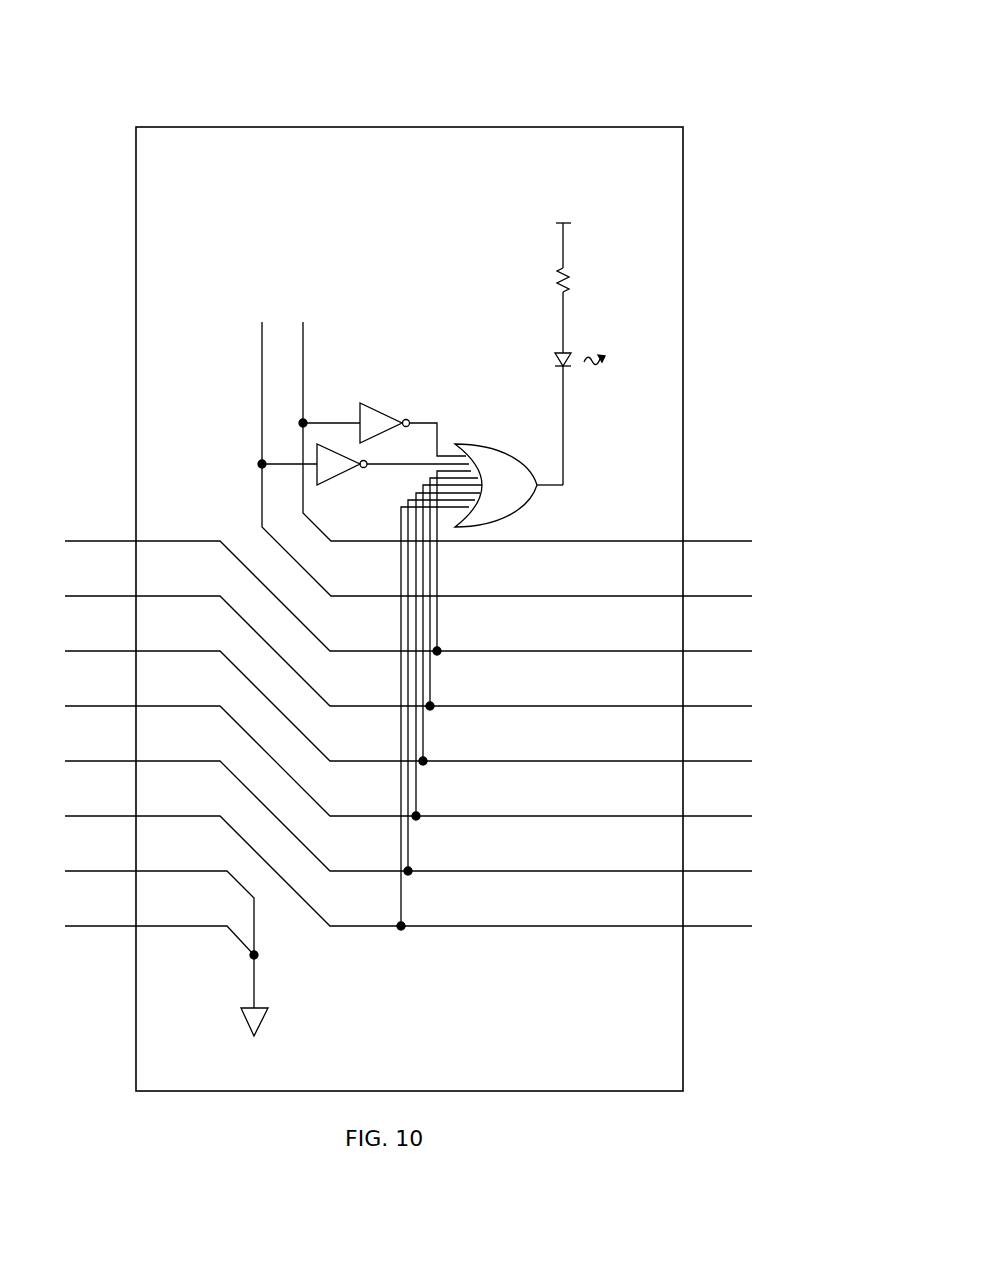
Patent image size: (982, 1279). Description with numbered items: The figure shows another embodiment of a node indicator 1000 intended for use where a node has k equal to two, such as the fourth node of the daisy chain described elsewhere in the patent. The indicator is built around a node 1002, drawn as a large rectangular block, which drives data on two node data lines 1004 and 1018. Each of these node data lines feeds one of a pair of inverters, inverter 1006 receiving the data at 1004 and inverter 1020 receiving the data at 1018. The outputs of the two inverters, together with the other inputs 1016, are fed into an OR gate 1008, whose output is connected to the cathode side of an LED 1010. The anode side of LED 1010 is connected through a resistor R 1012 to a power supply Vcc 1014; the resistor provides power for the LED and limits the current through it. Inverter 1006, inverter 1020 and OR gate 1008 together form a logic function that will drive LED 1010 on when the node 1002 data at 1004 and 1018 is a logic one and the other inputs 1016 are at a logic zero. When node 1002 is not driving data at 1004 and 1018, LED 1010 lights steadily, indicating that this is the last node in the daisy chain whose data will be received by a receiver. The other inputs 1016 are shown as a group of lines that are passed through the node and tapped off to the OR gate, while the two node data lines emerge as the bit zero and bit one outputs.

The node indicator 1000 is at (710, 41).
The node 1002 is at (409, 609).
The node data input 1004 is at (492, 397).
The inverter 1006 is at (384, 413).
The OR gate 1008 is at (531, 486).
The LED 1010 is at (613, 388).
The resistor R 1012 is at (600, 278).
The power supply Vcc 1014 is at (592, 229).
The other inputs 1016 is at (758, 637).
The node data input 1018 is at (490, 445).
The inverter 1020 is at (365, 476).